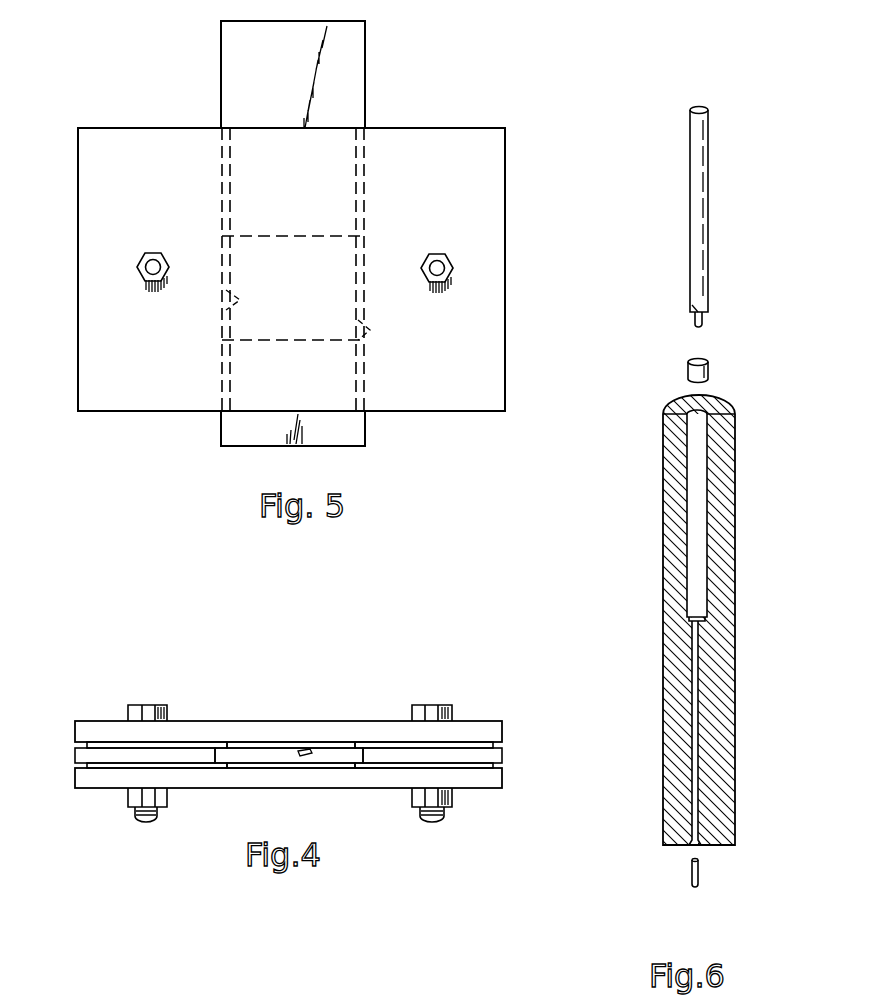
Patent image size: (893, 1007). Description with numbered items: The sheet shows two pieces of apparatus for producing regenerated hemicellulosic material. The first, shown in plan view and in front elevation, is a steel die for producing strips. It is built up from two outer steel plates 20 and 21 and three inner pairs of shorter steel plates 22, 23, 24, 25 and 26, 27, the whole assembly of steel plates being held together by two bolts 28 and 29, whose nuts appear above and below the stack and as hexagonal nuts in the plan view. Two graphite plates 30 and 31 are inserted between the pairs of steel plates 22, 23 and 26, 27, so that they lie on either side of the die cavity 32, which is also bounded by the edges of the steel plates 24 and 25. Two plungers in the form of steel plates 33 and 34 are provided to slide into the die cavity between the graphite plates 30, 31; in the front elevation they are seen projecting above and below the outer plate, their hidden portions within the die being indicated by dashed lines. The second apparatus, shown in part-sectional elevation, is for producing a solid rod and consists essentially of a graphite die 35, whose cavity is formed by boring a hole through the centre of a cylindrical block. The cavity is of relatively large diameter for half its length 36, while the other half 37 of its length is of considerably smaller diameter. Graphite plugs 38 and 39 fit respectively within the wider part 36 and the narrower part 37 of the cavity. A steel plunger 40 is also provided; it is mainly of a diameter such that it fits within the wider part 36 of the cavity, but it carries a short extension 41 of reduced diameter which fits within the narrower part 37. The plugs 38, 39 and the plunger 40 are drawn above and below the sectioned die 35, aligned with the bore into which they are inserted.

In FIG. 5, the outer steel plate 20 is at (485, 163).
In FIG. 4, the outer steel plate 20 is at (237, 782).
In FIG. 4, the outer steel plate 21 is at (217, 732).
In FIG. 4, the inner steel plate 22 is at (85, 766).
In FIG. 4, the inner steel plate 23 is at (497, 769).
In FIG. 5, the inner steel plate 24 is at (248, 298).
In FIG. 4, the inner steel plate 24 is at (78, 758).
In FIG. 5, the inner steel plate 25 is at (357, 335).
In FIG. 4, the inner steel plate 25 is at (502, 757).
In FIG. 4, the inner steel plate 26 is at (85, 743).
In FIG. 4, the inner steel plate 27 is at (497, 748).
In FIG. 5, the bolt 28 is at (137, 266).
In FIG. 4, the bolt 28 is at (160, 715).
In FIG. 5, the bolt 29 is at (453, 267).
In FIG. 4, the bolt 29 is at (448, 719).
In FIG. 5, the graphite plate 30 is at (365, 143).
In FIG. 4, the graphite plate 30 is at (333, 768).
In FIG. 4, the graphite plate 31 is at (333, 747).
In FIG. 5, the die cavity 32 is at (320, 306).
In FIG. 4, the die cavity 32 is at (302, 752).
In FIG. 5, the plunger 33 is at (353, 52).
In FIG. 4, the plunger 33 is at (340, 758).
In FIG. 5, the plunger 34 is at (350, 425).
In FIG. 6, the graphite die 35 is at (672, 522).
In FIG. 6, the wider part of the cavity 36 is at (697, 450).
In FIG. 6, the narrower part of the cavity 37 is at (697, 668).
In FIG. 6, the graphite plug 38 is at (686, 372).
In FIG. 6, the graphite plug 39 is at (690, 873).
In FIG. 6, the steel plunger 40 is at (698, 227).
In FIG. 6, the short extension 41 is at (693, 323).